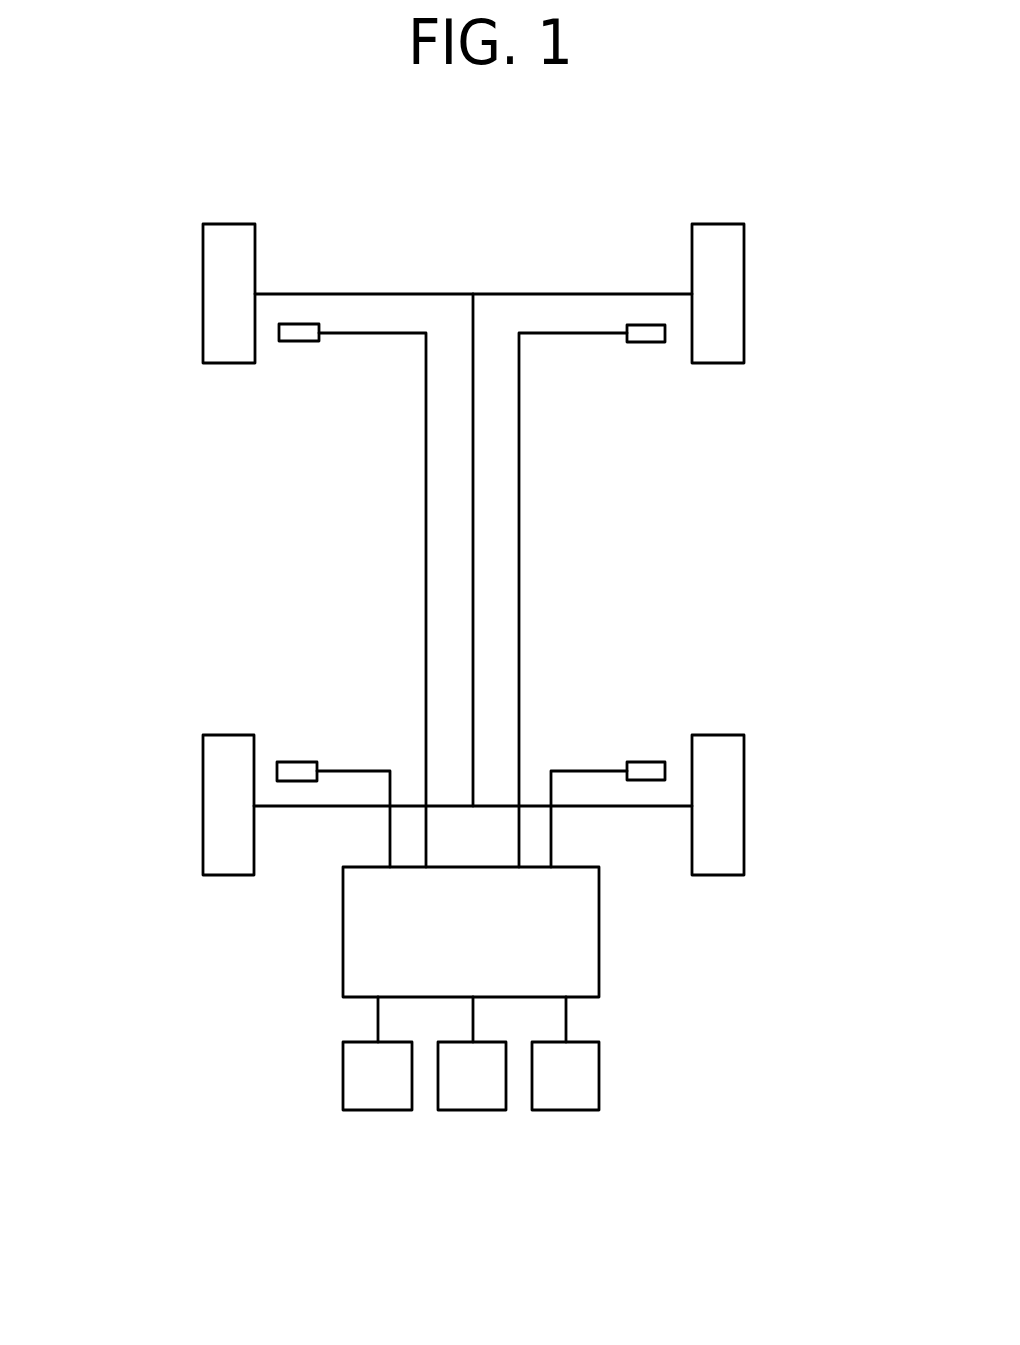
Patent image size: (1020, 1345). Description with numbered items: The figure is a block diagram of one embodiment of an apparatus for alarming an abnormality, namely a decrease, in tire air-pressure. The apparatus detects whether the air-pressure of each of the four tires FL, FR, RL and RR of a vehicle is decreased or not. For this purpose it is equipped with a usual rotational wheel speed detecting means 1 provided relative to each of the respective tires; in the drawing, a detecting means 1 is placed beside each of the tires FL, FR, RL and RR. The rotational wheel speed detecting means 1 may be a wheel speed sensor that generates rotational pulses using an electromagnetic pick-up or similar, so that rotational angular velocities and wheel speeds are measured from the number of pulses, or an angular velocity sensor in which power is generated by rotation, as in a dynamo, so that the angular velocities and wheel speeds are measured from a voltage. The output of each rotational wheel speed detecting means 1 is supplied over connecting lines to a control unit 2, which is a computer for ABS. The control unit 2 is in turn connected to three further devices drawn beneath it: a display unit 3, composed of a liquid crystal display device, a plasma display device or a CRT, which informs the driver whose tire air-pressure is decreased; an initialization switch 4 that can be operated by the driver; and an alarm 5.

The front left tire FL is at (217, 263).
The front right tire FR is at (727, 270).
The rear left tire RL is at (215, 788).
The rear right tire RR is at (726, 793).
The rotational wheel speed detecting means 1 is at (290, 343).
The control unit 2 is at (592, 963).
The display unit 3 is at (381, 1097).
The initialization switch 4 is at (476, 1097).
The alarm 5 is at (568, 1097).